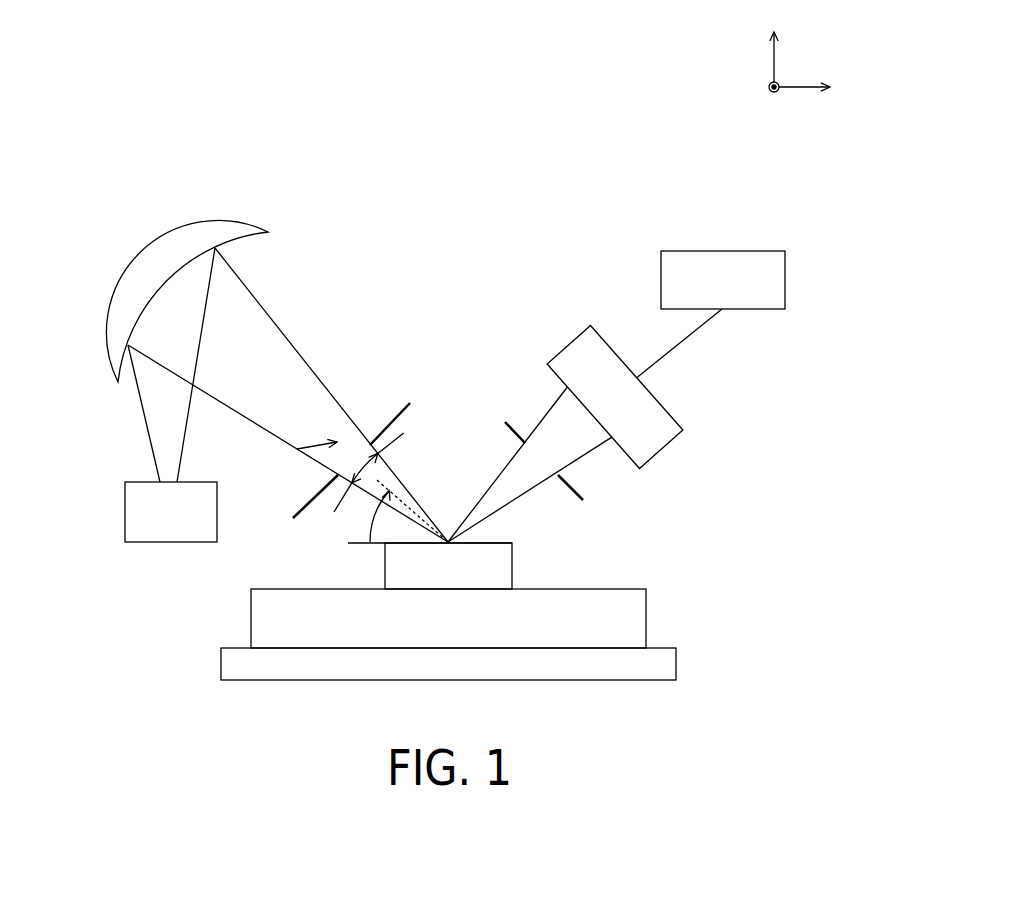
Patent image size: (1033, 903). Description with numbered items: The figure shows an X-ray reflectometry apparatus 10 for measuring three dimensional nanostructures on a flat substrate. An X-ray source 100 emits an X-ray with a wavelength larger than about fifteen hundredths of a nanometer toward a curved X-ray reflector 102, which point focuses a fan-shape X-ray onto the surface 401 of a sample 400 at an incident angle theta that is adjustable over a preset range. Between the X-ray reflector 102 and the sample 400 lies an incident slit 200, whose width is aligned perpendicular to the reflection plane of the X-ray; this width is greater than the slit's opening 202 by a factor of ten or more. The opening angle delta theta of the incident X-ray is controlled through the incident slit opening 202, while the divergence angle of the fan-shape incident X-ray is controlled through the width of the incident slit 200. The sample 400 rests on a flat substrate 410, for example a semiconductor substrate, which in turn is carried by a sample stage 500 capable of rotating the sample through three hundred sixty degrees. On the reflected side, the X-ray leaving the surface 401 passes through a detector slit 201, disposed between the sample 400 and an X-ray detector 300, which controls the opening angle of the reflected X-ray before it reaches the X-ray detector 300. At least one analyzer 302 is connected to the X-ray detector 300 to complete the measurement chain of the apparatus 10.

The X-ray reflectometry apparatus 10 is at (82, 100).
The X-ray source 100 is at (125, 507).
The X-ray reflector 102 is at (180, 242).
The incident slit 200 is at (388, 422).
The detector slit 201 is at (520, 432).
The incident slit opening 202 is at (297, 449).
The X-ray detector 300 is at (662, 450).
The analyzer 302 is at (722, 251).
The sample 400 is at (385, 566).
The surface 401 is at (497, 540).
The flat substrate 410 is at (251, 617).
The sample stage 500 is at (221, 662).